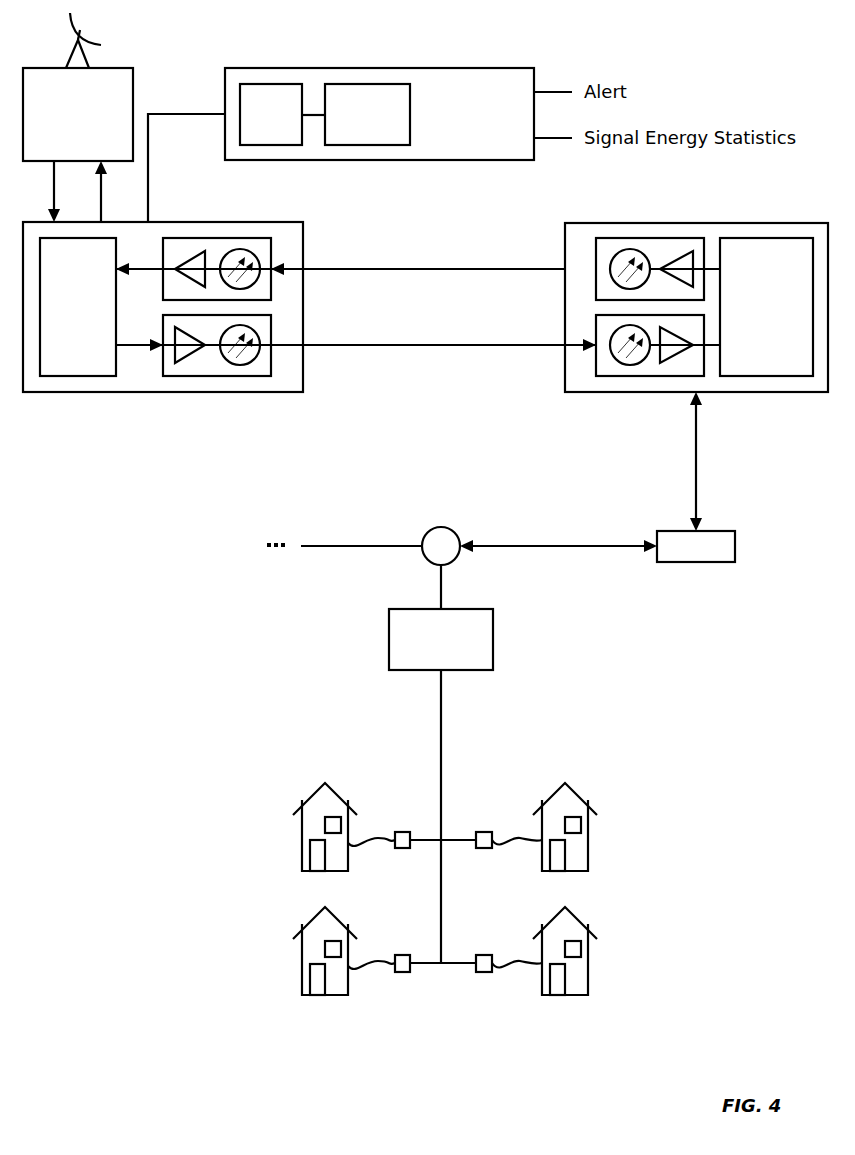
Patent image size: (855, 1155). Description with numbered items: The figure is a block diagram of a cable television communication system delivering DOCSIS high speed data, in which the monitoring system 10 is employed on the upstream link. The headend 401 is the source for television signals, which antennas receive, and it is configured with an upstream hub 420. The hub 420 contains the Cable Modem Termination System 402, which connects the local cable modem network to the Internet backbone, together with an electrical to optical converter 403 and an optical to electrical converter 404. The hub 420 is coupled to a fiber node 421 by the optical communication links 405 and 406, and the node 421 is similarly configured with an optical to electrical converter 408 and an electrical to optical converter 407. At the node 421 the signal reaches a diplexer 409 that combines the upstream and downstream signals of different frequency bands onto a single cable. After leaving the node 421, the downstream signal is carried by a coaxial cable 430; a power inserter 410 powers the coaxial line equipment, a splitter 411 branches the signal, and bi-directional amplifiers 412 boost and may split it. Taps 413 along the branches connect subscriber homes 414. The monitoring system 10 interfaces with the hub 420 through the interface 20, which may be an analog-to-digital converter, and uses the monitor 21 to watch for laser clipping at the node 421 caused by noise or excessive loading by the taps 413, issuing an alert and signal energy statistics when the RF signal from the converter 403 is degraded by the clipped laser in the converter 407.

The monitoring system 10 is at (379, 114).
The interface 20 is at (271, 114).
The monitor 21 is at (367, 114).
The headend 401 is at (78, 87).
The Cable Modem Termination System (CMTS) 402 is at (78, 307).
The electrical to optical converter 403 is at (218, 376).
The optical to electrical converter 404 is at (200, 238).
The optical communication link 405 is at (386, 345).
The optical communication link 406 is at (430, 269).
The electrical to optical converter 407 is at (650, 238).
The optical to electrical converter 408 is at (650, 376).
The diplexer 409 is at (766, 307).
The power inserter 410 is at (696, 546).
The splitter 411 is at (441, 520).
The bi-directional amplifier 412 is at (441, 639).
The taps 413 is at (404, 832).
The subscriber's homes 414 is at (318, 780).
The hub 420 is at (116, 392).
The fiber node 421 is at (807, 392).
The coaxial cable 430 is at (697, 484).